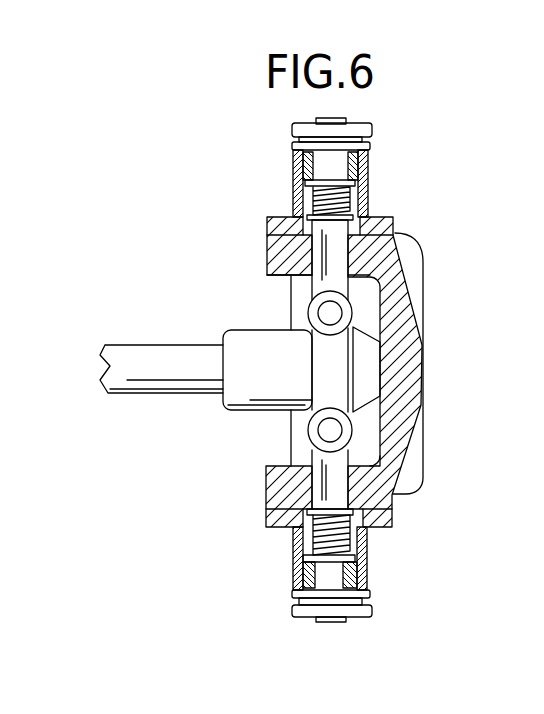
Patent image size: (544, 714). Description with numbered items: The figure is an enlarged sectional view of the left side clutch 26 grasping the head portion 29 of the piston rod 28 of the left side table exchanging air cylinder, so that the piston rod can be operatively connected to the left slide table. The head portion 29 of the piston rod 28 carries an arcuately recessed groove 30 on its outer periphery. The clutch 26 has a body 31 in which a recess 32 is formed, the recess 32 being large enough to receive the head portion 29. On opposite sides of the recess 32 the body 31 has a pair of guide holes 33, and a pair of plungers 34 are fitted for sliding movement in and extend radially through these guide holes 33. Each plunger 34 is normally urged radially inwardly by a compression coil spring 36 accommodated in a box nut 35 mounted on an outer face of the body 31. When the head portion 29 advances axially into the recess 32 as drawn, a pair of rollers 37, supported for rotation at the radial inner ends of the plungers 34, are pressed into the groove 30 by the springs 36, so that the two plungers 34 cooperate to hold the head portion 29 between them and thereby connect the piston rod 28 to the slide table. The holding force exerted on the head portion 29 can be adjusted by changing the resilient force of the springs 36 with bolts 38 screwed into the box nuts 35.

The left side clutch 26 is at (396, 235).
The piston rod 28 is at (153, 382).
The head portion 29 is at (245, 412).
The arcuately recessed groove 30 is at (337, 362).
The body 31 is at (397, 331).
The recess 32 is at (381, 418).
The guide holes 33 is at (322, 252).
The plungers 34 is at (335, 256).
The box nut 35 is at (293, 181).
The compression coil spring 36 is at (371, 183).
The rollers 37 is at (308, 305).
The bolts 38 is at (372, 128).